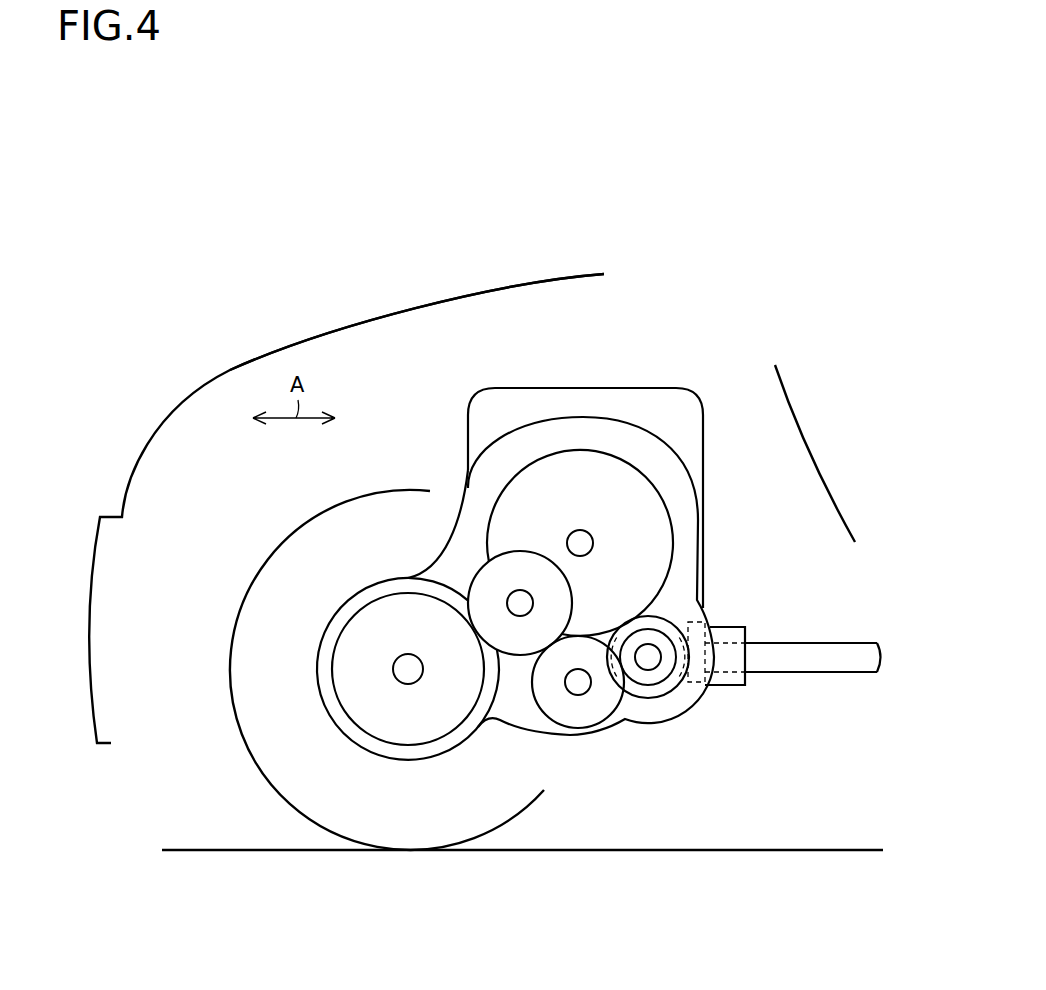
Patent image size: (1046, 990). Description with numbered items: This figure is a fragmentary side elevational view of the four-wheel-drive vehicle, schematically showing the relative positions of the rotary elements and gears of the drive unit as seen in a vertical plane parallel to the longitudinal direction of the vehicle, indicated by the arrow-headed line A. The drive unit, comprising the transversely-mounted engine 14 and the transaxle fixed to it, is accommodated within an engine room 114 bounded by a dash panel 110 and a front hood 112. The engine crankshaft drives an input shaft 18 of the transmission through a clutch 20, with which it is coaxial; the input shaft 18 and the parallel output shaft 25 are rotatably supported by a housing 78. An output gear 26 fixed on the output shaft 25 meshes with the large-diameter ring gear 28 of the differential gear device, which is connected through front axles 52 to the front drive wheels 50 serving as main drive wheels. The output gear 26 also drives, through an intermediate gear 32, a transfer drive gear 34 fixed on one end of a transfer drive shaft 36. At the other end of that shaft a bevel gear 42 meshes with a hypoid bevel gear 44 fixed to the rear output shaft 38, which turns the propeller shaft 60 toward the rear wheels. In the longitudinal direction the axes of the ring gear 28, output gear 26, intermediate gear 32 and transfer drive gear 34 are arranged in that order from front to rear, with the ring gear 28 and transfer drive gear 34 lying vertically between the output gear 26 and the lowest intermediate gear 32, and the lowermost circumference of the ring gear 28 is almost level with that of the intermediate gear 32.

The engine 14 is at (547, 398).
The input shaft 18 is at (584, 541).
The clutch 20 is at (652, 480).
The output shaft 25 is at (512, 600).
The output gear 26 is at (513, 656).
The ring gear 28 is at (333, 661).
The intermediate gear 32 is at (577, 729).
The transfer drive gear 34 is at (647, 661).
The transfer drive shaft 36 is at (651, 661).
The rear output shaft 38 is at (798, 656).
The propeller shaft 60 is at (811, 657).
The bevel gear 42 is at (692, 688).
The bevel gear 44 is at (703, 621).
The front drive wheel 50 is at (267, 573).
The front axle 52 is at (404, 677).
The housing 78 is at (660, 726).
The dash panel 110 is at (813, 458).
The front hood 112 is at (336, 327).
The engine room 114 is at (433, 340).